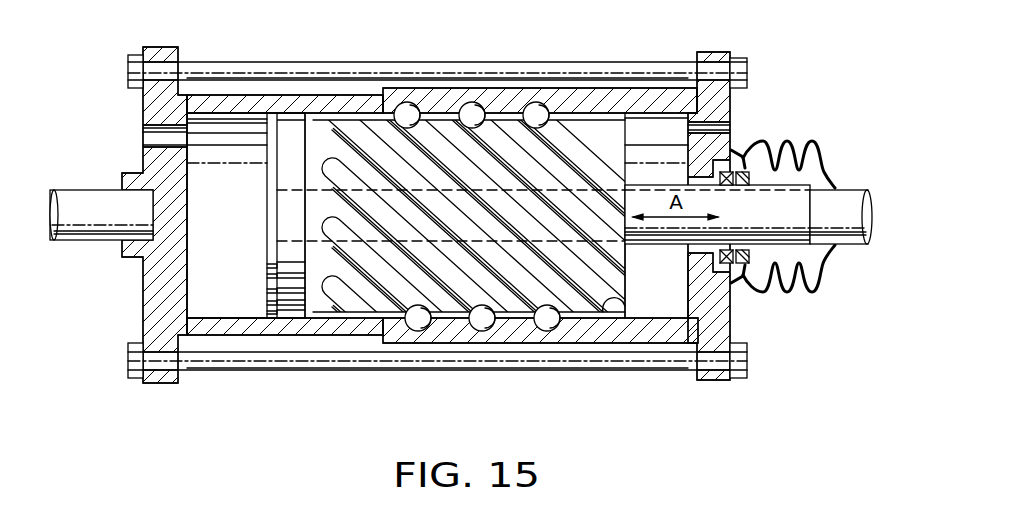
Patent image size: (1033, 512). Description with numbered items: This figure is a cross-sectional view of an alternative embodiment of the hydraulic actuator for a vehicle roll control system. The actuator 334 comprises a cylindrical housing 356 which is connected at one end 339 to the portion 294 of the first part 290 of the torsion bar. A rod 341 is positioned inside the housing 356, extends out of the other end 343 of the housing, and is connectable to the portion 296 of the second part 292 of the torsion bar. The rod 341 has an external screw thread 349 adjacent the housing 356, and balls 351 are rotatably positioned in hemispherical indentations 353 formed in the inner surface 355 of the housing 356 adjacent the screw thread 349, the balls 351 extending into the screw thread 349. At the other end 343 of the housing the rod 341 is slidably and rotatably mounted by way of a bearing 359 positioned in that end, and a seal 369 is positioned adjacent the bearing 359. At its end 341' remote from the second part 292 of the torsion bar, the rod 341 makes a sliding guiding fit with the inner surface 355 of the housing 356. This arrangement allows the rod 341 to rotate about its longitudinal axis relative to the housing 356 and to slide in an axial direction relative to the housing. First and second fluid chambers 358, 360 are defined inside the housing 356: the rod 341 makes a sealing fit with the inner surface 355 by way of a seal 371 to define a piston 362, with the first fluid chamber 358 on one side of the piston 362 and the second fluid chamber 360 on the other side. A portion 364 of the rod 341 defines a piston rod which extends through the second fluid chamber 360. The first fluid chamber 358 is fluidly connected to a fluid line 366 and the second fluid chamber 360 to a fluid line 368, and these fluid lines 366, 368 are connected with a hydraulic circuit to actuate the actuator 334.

The first part of the torsion bar 290 is at (87, 240).
The second part of the torsion bar 292 is at (847, 246).
The portion of the first part of the torsion bar 294 is at (87, 193).
The portion of the second part of the torsion bar 296 is at (845, 197).
The actuator 334 is at (210, 378).
The one end of the housing 339 is at (148, 292).
The rod 341 is at (656, 89).
The end of the rod 341' is at (246, 215).
The other end of the housing 343 is at (727, 337).
The external screw thread 349 is at (437, 140).
The balls 351 is at (528, 105).
The hemispherical indentations 353 is at (541, 326).
The inner surface of the housing 355 is at (632, 318).
The cylindrical housing 356 is at (342, 335).
The first fluid chamber 358 is at (226, 133).
The bearing 359 is at (742, 157).
The second fluid chamber 360 is at (663, 300).
The piston 362 is at (452, 310).
The portion of the rod 364 is at (775, 224).
The fluid line 366 is at (145, 138).
The fluid line 368 is at (723, 133).
The seal 369 is at (735, 272).
The seal 371 is at (288, 315).